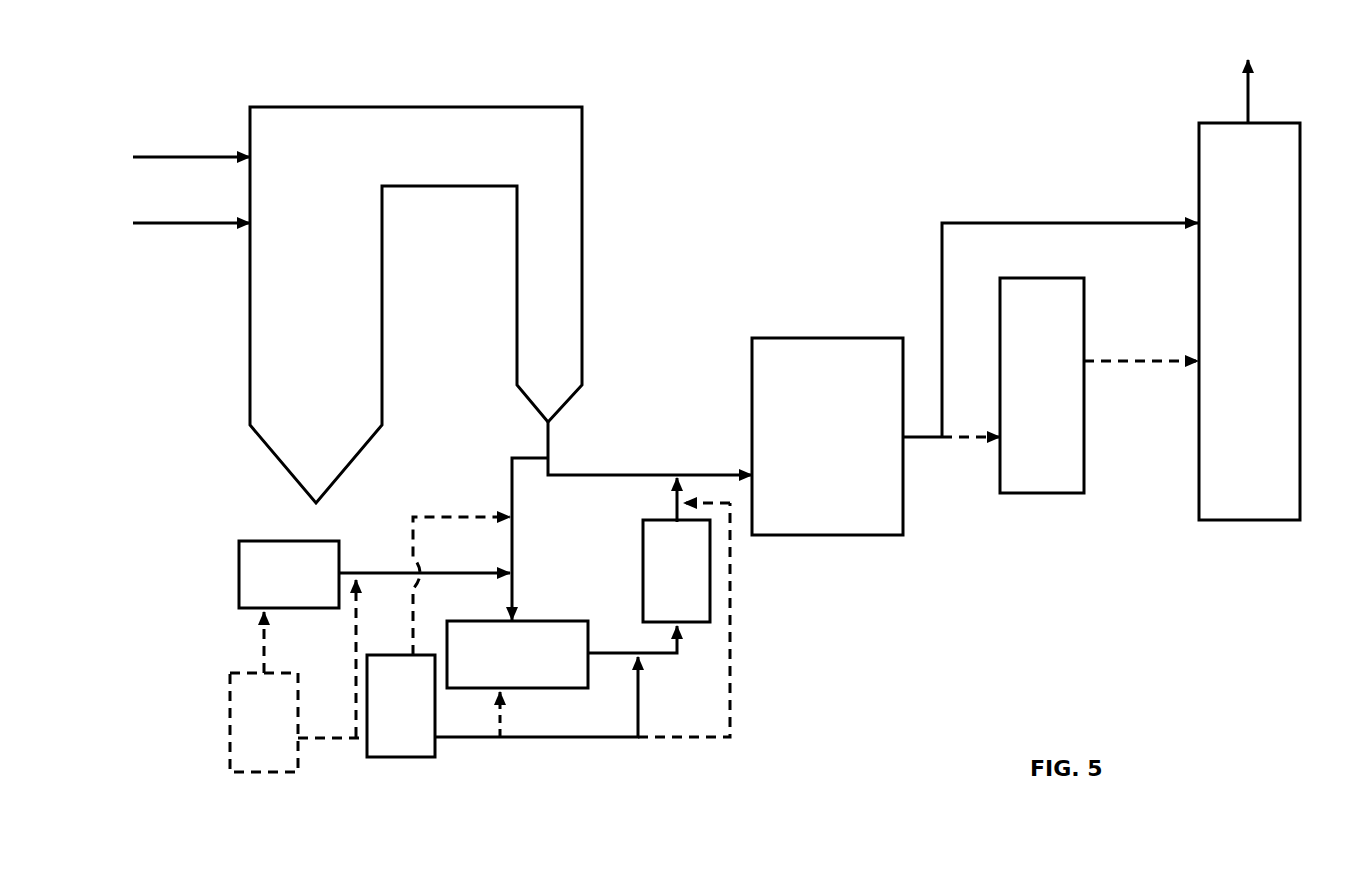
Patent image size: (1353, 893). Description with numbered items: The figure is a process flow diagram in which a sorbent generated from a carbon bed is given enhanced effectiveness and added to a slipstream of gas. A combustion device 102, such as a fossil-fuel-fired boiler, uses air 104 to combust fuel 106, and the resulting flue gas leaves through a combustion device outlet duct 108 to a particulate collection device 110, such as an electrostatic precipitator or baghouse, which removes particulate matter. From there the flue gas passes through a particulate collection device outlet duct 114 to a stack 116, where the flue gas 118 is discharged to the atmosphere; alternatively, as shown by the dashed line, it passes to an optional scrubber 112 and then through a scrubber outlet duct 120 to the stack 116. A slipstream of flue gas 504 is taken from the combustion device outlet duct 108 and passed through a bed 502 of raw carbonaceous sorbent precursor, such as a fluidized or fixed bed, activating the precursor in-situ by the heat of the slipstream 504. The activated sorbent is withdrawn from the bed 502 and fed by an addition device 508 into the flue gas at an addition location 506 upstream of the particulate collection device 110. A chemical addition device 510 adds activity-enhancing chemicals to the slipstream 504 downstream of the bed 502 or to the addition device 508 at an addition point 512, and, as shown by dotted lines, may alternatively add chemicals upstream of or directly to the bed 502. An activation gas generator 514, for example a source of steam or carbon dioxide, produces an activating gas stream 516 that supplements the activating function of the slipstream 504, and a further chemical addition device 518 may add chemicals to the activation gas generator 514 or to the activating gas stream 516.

The combustion device 102 is at (416, 107).
The air 104 is at (212, 155).
The fuel 106 is at (212, 226).
The combustion device outlet duct 108 is at (586, 473).
The particulate collection device 110 is at (800, 337).
The scrubber 112 is at (1005, 493).
The particulate collection device outlet duct 114 is at (1050, 222).
The stack 116 is at (1198, 157).
The flue gas 118 is at (1250, 108).
The scrubber outlet duct 120 is at (1105, 363).
The bed 502 is at (537, 620).
The slipstream of flue gas 504 is at (510, 477).
The addition location 506 is at (677, 473).
The addition device 508 is at (643, 557).
The chemical addition device 510 is at (418, 757).
The addition point 512 is at (645, 655).
The activation gas generator 514 is at (239, 562).
The activating gas stream 516 is at (388, 572).
The chemical addition device 518 is at (230, 750).